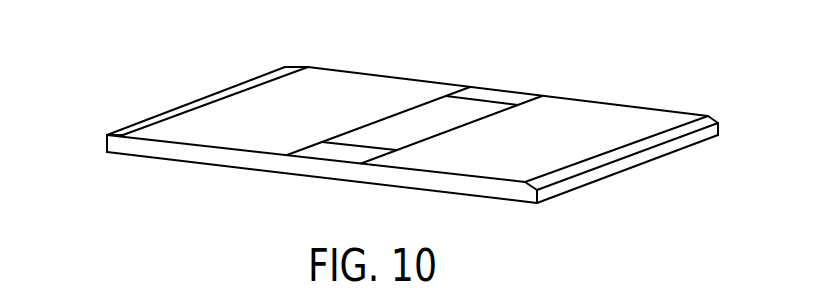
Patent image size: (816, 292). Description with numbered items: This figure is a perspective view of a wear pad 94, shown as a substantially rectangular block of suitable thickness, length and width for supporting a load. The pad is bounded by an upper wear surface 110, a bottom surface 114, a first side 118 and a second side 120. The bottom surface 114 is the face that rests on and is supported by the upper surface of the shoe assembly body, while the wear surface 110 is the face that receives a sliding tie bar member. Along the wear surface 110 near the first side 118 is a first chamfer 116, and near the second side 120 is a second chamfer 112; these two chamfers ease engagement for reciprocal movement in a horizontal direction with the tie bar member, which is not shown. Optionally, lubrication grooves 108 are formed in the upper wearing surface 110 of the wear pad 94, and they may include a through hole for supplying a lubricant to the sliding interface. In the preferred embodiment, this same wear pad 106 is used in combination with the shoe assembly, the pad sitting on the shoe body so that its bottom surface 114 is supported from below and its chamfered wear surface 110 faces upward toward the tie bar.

The wear pad 94 is at (609, 103).
The wear pad 106 is at (467, 63).
The lubrication grooves 108 is at (400, 123).
The wear surface 110 is at (505, 125).
The second chamfer 112 is at (705, 118).
The bottom surface 114 is at (287, 175).
The first chamfer 116 is at (208, 100).
The first side 118 is at (106, 143).
The second side 120 is at (618, 165).